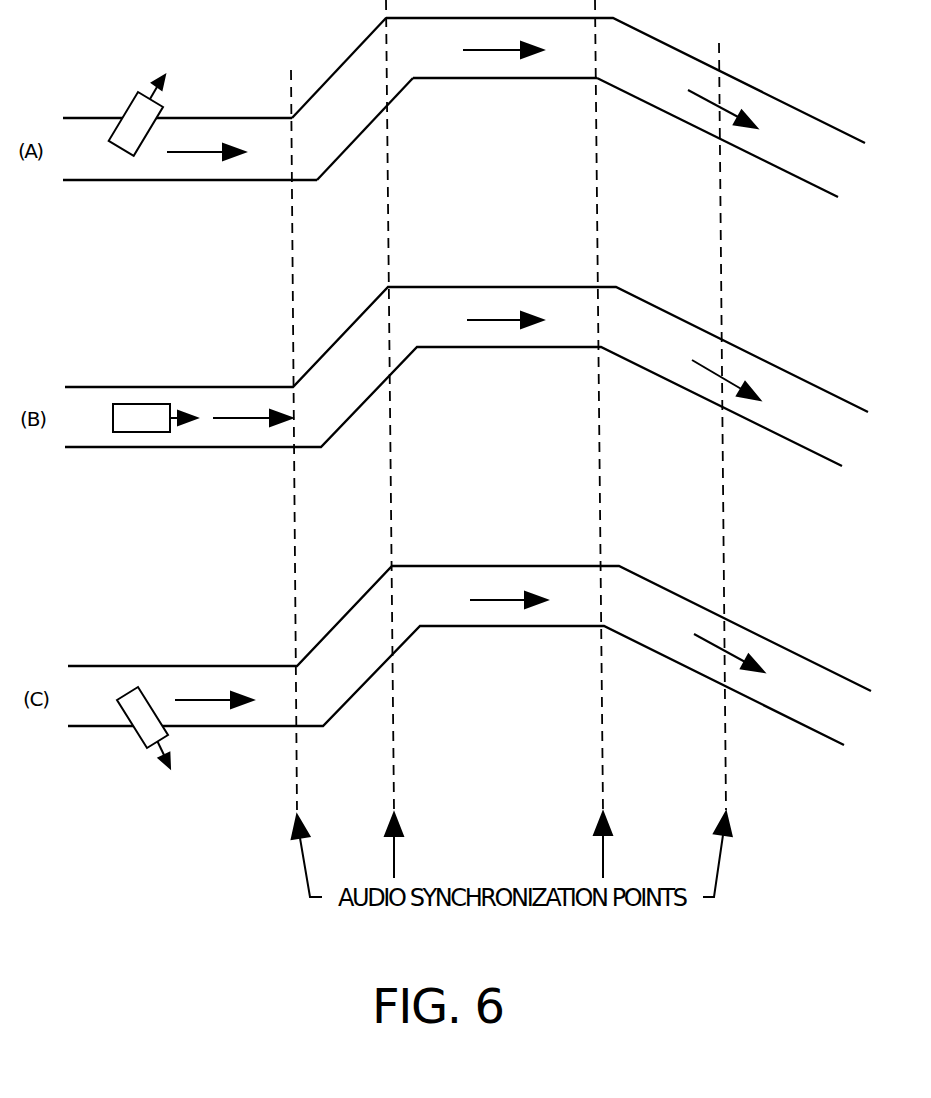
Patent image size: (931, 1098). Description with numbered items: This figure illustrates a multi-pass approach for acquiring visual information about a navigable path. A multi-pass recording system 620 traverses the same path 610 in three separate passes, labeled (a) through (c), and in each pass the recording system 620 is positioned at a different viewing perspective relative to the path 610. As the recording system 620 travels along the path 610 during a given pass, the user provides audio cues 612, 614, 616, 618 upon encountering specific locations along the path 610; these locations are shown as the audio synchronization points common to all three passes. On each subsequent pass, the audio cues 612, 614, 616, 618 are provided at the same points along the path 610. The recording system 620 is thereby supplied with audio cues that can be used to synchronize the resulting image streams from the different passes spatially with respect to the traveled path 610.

The path 610 is at (362, 44).
The audio cue 612 is at (293, 180).
The audio cue 614 is at (390, 107).
The audio cue 616 is at (595, 78).
The audio cue 618 is at (717, 140).
The multi-pass recording system 620 is at (132, 145).